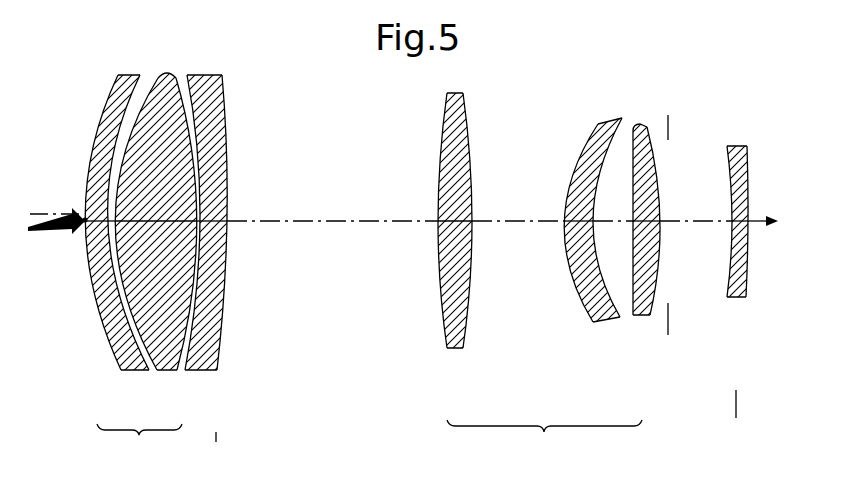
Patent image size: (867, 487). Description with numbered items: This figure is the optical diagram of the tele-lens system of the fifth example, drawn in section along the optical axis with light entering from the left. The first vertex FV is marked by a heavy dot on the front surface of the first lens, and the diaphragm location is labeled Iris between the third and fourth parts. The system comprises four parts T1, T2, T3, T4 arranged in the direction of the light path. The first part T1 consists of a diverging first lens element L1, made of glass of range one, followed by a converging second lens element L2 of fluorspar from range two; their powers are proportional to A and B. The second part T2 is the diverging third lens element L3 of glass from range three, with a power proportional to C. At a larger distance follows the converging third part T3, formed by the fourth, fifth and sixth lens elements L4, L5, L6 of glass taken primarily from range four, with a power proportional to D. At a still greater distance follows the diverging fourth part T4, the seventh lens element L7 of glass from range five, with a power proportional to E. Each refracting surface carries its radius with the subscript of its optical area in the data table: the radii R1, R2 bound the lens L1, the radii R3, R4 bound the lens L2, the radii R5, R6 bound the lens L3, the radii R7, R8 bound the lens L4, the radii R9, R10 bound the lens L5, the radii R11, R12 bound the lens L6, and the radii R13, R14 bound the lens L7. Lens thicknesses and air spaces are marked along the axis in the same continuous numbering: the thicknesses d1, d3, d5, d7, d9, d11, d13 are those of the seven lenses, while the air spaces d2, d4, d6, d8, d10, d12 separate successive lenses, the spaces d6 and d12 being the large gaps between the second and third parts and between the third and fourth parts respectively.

The radius of first optical area R1 is at (105, 112).
The radius of second optical area R2 is at (138, 84).
The radius of third optical area R3 is at (166, 80).
The radius of fourth optical area R4 is at (176, 82).
The radius of fifth optical area R5 is at (202, 90).
The radius of sixth optical area R6 is at (229, 111).
The radius of seventh optical area R7 is at (440, 128).
The radius of eighth optical area R8 is at (469, 135).
The radius of ninth optical area R9 is at (578, 152).
The radius of tenth optical area R10 is at (620, 135).
The radius of eleventh optical area R11 is at (636, 128).
The radius of twelfth optical area R12 is at (660, 156).
The radius of thirteenth optical area R13 is at (726, 160).
The radius of fourteenth optical area R14 is at (750, 163).
The lens thickness d1 is at (98, 225).
The air space d2 is at (102, 234).
The lens thickness d3 is at (156, 225).
The air space d4 is at (198, 263).
The lens thickness d5 is at (213, 232).
The air space d6 is at (332, 224).
The lens thickness d7 is at (455, 225).
The air space d8 is at (518, 225).
The lens thickness d9 is at (578, 225).
The air space d10 is at (615, 225).
The lens thickness d11 is at (650, 227).
The air space d12 is at (696, 225).
The lens thickness d13 is at (748, 211).
The first lens element L1 is at (128, 372).
The second lens element L2 is at (167, 367).
The third lens element L3 is at (208, 360).
The fourth lens element L4 is at (455, 350).
The fifth lens element L5 is at (594, 316).
The sixth lens element L6 is at (637, 312).
The seventh lens element L7 is at (736, 300).
The first part T1 is at (139, 449).
The second part T2 is at (215, 455).
The third part T3 is at (544, 447).
The fourth part T4 is at (729, 425).
The first vertex FV is at (83, 219).
The diaphragm location Iris is at (664, 312).